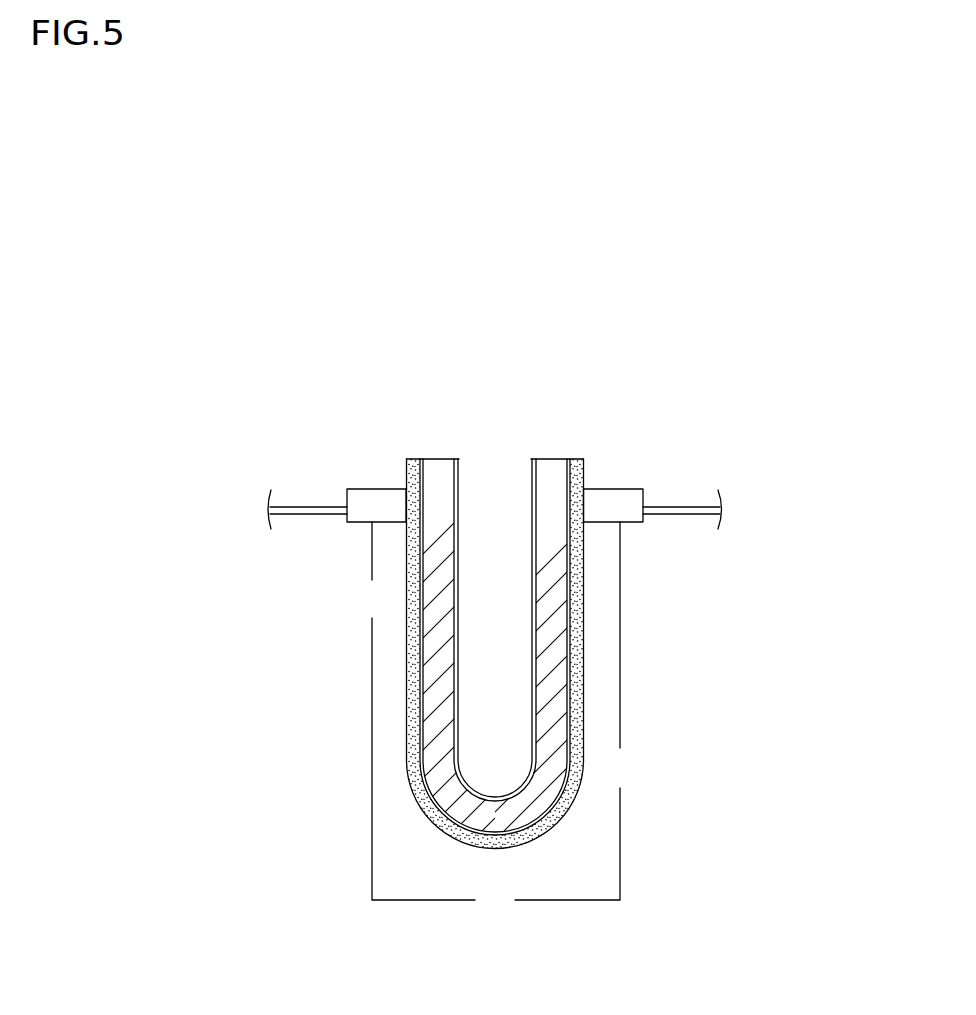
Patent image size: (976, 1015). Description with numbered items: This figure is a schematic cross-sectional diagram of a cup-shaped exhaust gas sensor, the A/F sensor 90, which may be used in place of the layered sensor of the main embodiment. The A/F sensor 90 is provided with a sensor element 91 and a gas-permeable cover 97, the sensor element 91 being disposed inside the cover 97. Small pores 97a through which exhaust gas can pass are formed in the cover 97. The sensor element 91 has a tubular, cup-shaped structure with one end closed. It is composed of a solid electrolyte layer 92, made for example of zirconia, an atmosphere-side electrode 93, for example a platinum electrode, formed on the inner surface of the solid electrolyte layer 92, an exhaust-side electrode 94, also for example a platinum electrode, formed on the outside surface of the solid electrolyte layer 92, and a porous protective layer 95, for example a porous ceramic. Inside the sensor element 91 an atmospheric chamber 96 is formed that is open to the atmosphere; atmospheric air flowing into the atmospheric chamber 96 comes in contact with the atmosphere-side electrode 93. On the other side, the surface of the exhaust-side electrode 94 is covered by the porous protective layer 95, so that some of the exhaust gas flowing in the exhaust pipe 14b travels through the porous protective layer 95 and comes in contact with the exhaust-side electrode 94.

The A/F sensor 90 is at (546, 664).
The sensor element 91 is at (570, 817).
The solid electrolyte layer 92 is at (507, 773).
The atmosphere-side electrode 93 is at (498, 818).
The exhaust-side electrode 94 is at (451, 830).
The porous protective layer 95 is at (432, 816).
The atmospheric chamber 96 is at (470, 470).
The cover 97 is at (372, 773).
The small pores 97a is at (372, 597).
The exhaust pipe 14b is at (320, 516).